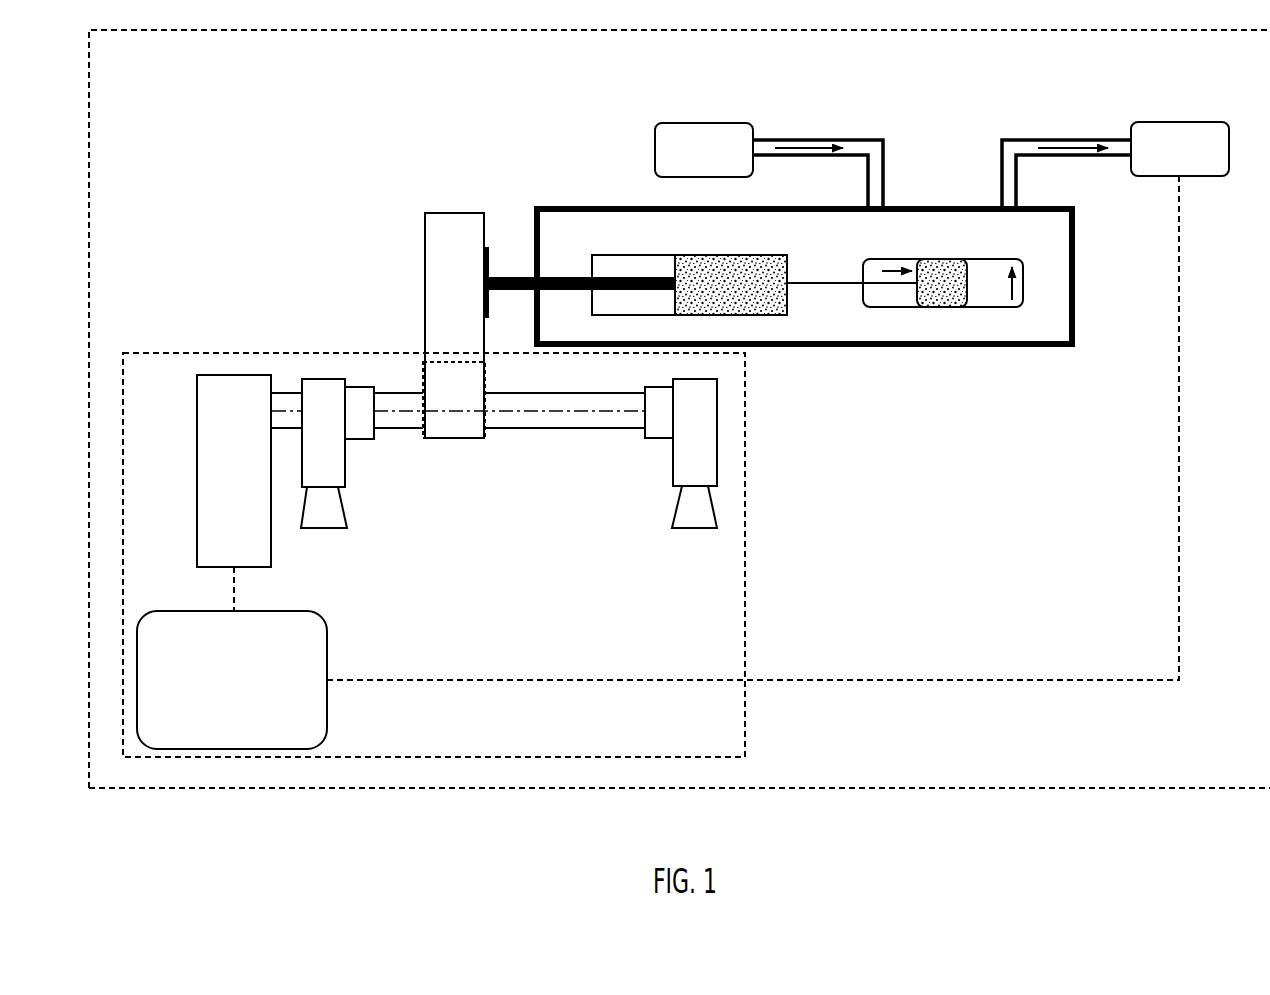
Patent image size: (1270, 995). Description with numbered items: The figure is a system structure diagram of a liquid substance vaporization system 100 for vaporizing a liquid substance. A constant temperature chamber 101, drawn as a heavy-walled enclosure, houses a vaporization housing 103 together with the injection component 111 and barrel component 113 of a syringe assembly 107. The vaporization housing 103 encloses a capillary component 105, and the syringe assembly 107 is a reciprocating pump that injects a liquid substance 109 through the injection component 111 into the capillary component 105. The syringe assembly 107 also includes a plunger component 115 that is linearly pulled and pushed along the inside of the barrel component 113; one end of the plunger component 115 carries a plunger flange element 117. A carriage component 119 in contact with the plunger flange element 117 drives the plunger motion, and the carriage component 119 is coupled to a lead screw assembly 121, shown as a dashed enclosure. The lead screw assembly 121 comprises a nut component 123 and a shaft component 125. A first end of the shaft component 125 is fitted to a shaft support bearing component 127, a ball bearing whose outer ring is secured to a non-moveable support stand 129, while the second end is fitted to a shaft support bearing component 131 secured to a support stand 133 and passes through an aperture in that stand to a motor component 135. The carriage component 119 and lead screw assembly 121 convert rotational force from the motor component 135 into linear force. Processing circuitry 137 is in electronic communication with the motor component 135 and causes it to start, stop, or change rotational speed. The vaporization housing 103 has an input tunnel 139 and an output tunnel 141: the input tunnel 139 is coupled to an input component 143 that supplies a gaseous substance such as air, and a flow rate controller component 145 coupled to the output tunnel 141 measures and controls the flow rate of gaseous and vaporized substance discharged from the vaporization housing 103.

The liquid substance vaporization system 100 is at (872, 790).
The constant temperature chamber 101 is at (970, 346).
The vaporization housing 103 is at (1018, 309).
The capillary component 105 is at (970, 282).
The syringe assembly 107 is at (595, 258).
The liquid substance 109 is at (752, 286).
The injection component 111 is at (830, 286).
The barrel component 113 is at (655, 258).
The plunger component 115 is at (553, 292).
The plunger flange element 117 is at (489, 255).
The carriage component 119 is at (425, 262).
The lead screw assembly 121 is at (750, 575).
The nut component 123 is at (455, 441).
The shaft component 125 is at (537, 431).
The shaft support bearing component 127 is at (643, 440).
The support stand 129 is at (690, 531).
The shaft support bearing component 131 is at (370, 441).
The support stand 133 is at (335, 531).
The motor component 135 is at (252, 485).
The processing circuitry 137 is at (250, 695).
The input tunnel 139 is at (860, 138).
The output tunnel 141 is at (1010, 138).
The input component 143 is at (721, 165).
The flow rate controller component 145 is at (1198, 164).